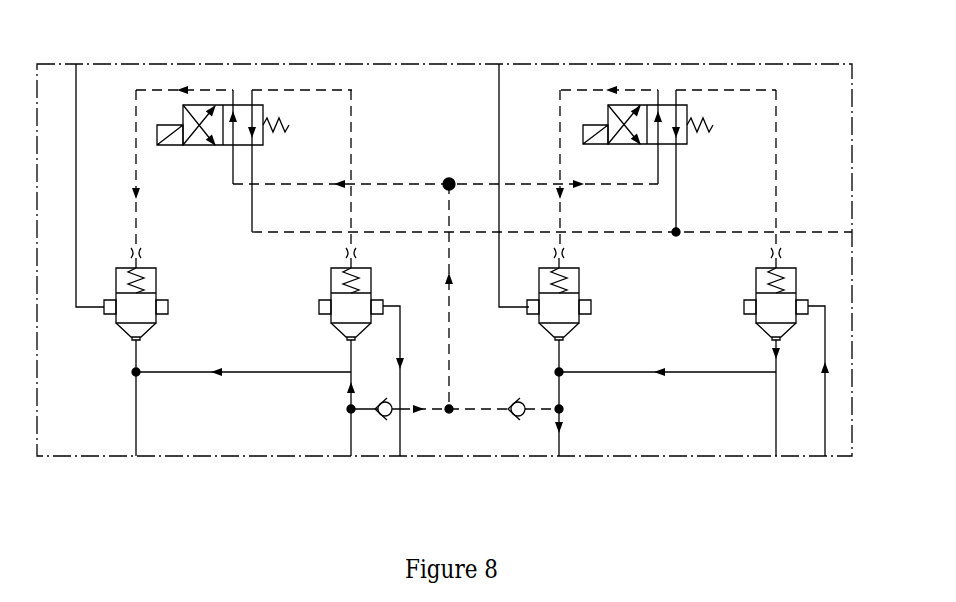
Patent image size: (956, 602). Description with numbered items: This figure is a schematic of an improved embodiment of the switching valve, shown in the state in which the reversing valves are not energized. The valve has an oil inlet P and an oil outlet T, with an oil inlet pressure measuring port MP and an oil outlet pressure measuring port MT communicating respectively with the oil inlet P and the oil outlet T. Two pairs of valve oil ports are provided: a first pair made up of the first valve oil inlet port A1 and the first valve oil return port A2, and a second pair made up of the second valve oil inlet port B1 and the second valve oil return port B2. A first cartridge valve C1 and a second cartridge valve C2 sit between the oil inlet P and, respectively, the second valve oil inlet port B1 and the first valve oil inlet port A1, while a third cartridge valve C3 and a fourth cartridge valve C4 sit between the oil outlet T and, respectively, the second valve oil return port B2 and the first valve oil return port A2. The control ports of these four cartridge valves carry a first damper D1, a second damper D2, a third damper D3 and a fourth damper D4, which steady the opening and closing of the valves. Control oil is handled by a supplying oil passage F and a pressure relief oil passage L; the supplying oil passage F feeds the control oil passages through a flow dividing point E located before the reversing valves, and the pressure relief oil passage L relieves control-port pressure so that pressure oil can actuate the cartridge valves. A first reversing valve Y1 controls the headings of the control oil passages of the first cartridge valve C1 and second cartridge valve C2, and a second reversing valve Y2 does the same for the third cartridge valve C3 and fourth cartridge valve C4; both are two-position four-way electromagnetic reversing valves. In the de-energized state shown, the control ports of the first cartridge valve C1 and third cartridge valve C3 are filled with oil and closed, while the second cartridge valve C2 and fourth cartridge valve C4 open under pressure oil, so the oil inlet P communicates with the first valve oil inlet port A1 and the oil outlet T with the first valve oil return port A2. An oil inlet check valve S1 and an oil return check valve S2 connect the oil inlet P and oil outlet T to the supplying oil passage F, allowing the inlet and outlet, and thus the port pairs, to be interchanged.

The second valve oil inlet port B1 is at (83, 170).
The second valve oil return port B2 is at (508, 170).
The first reversing valve Y1 is at (244, 159).
The second reversing valve Y2 is at (668, 159).
The flow dividing point E is at (445, 169).
The pressure relief oil passage L is at (562, 231).
The supplying oil passage F is at (456, 298).
The first damper D1 is at (151, 171).
The second damper D2 is at (367, 171).
The third damper D3 is at (574, 171).
The fourth damper D4 is at (791, 171).
The first cartridge valve C1 is at (147, 294).
The second cartridge valve C2 is at (363, 294).
The third cartridge valve C3 is at (570, 294).
The fourth cartridge valve C4 is at (787, 294).
The oil inlet pressure measuring port MP is at (236, 413).
The oil inlet P is at (351, 413).
The first valve oil inlet port A1 is at (416, 396).
The oil inlet check valve S1 is at (375, 398).
The oil return check valve S2 is at (504, 398).
The oil outlet T is at (664, 413).
The oil outlet pressure measuring port MT is at (780, 413).
The first valve oil return port A2 is at (824, 396).